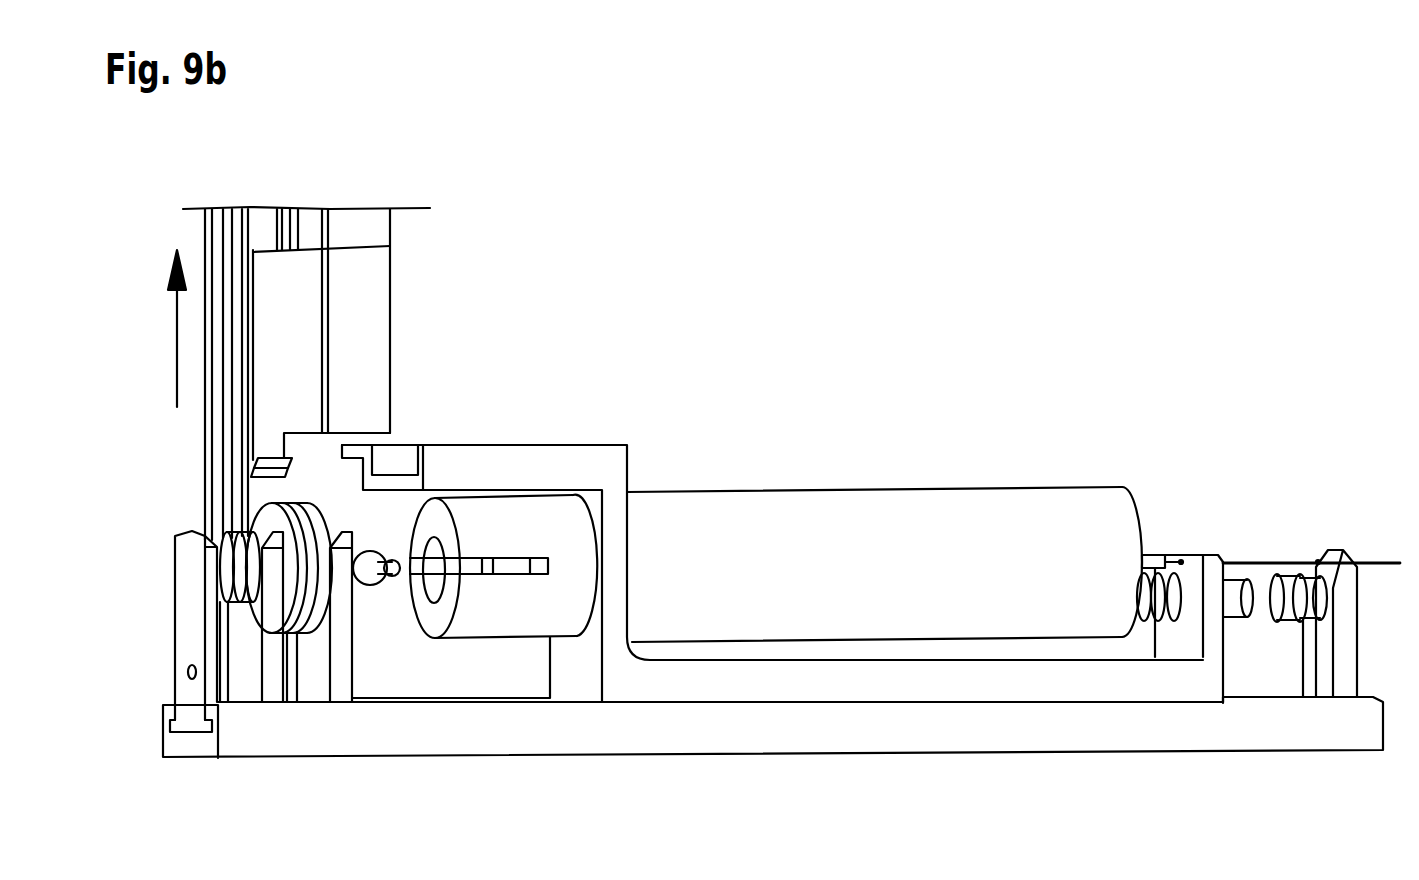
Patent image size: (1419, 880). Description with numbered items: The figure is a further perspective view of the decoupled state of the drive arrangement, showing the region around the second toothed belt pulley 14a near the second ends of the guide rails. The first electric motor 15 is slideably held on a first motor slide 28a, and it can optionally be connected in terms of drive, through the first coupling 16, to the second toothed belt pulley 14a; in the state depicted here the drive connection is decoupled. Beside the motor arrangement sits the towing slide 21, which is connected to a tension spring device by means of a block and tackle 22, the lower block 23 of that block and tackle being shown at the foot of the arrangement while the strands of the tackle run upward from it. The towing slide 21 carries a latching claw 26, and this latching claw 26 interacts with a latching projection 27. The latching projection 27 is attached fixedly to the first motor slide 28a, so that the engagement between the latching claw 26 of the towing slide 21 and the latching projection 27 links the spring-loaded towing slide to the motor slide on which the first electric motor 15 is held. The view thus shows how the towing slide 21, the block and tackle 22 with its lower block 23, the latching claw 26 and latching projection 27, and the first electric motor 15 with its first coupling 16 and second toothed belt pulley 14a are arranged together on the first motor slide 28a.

The block and tackle 22 is at (210, 228).
The towing slide 21 is at (288, 340).
The second toothed belt pulley 14a is at (307, 538).
The first coupling 16 is at (503, 527).
The latching projection 27 is at (602, 475).
The first electric motor 15 is at (847, 548).
The latching claw 26 is at (268, 472).
The lower block 23 is at (193, 638).
The first motor slide 28a is at (795, 673).